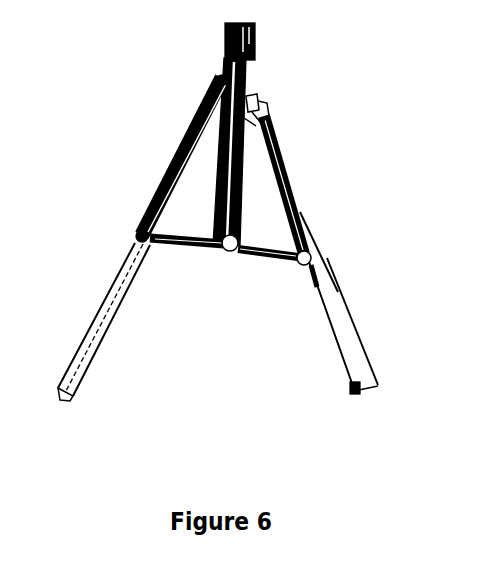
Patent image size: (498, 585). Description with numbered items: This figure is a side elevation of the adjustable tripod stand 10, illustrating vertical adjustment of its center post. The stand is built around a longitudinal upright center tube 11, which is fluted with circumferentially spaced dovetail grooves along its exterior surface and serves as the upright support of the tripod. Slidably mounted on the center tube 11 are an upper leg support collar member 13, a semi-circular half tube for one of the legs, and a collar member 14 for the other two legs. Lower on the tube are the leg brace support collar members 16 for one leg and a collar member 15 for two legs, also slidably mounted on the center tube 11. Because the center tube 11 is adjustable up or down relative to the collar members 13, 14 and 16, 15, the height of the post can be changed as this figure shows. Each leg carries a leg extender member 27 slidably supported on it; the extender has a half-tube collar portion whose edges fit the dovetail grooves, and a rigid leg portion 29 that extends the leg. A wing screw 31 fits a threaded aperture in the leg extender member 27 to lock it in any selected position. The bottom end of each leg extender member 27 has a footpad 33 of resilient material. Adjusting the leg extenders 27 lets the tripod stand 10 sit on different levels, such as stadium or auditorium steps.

The adjustable tripod stand 10 is at (330, 195).
The center tube 11 is at (214, 196).
The upper leg support collar member 13 is at (250, 108).
The collar member 14 is at (212, 92).
The collar member 15 is at (203, 246).
The leg brace support collar member 16 is at (138, 235).
The leg extender member 27 is at (86, 349).
The rigid leg portion 29 is at (107, 294).
The wing screw 31 is at (313, 214).
The footpad 33 is at (73, 397).